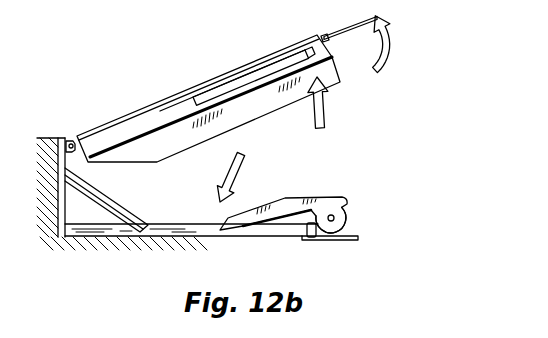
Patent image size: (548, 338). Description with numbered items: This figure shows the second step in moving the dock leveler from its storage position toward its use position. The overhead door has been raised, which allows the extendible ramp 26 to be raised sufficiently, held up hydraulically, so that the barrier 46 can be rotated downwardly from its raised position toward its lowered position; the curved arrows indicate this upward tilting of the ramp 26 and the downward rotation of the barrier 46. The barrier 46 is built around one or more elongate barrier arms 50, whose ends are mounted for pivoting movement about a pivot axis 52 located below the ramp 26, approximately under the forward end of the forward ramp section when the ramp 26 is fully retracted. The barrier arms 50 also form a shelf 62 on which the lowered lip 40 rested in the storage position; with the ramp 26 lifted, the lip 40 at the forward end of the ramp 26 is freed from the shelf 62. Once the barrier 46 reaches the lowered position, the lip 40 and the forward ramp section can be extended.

The ramp 26 is at (132, 113).
The lip 40 is at (333, 34).
The barrier mechanism 46 is at (280, 196).
The barrier arms 50 is at (333, 197).
The pivot axis 52 is at (345, 213).
The shelf 62 is at (314, 239).